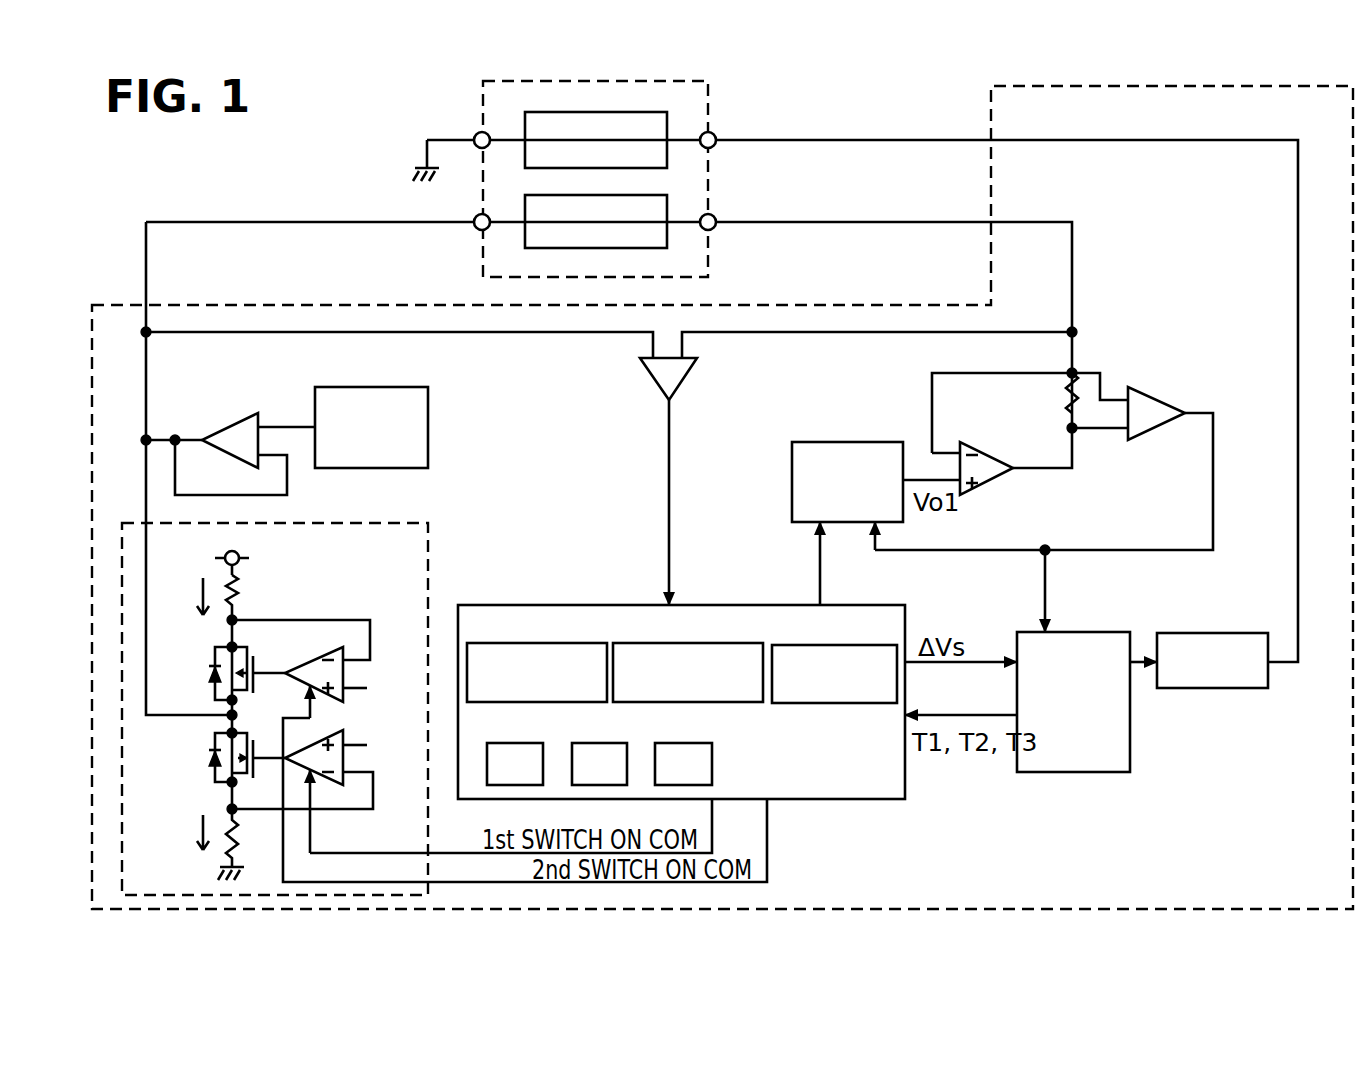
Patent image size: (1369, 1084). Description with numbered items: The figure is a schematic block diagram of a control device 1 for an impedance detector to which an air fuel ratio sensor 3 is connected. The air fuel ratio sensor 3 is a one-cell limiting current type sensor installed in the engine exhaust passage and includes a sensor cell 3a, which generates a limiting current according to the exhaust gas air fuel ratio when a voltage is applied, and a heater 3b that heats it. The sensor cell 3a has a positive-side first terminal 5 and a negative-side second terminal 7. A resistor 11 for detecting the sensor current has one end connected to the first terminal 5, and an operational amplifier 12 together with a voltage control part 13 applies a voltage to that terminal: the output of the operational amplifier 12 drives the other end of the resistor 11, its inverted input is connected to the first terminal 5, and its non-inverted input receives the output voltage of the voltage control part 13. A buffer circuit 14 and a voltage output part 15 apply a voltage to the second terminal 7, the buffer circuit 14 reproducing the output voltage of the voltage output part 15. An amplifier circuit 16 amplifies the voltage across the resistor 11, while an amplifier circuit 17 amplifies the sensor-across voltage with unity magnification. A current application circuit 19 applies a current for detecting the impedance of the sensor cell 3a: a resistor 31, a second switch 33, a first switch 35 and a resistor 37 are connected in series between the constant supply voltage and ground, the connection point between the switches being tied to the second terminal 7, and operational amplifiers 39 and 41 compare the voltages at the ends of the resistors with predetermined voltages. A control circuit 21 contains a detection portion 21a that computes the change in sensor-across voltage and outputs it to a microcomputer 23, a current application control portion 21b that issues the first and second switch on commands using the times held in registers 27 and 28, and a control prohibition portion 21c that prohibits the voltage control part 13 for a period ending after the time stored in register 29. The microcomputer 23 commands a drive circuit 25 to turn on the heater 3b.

The control device 1 is at (352, 305).
The air fuel ratio sensor 3 is at (708, 180).
The sensor cell 3a is at (640, 195).
The heater 3b is at (640, 112).
The first terminal 5 is at (716, 228).
The second terminal 7 is at (474, 228).
The resistor 11 is at (1065, 397).
The operational amplifier 12 is at (985, 447).
The voltage control part 13 is at (820, 442).
The buffer circuit 14 is at (246, 422).
The voltage output part 15 is at (354, 372).
The amplifier circuit 16 is at (1150, 390).
The amplifier circuit 17 is at (650, 381).
The current application circuit 19 is at (402, 522).
The control circuit 21 is at (840, 800).
The detection portion 21a is at (835, 645).
The current application control portion 21b is at (548, 643).
The control prohibition portion 21c is at (705, 643).
The microcomputer 23 is at (1072, 632).
The drive circuit 25 is at (1213, 633).
The register 27 is at (515, 743).
The register 28 is at (600, 743).
The register 29 is at (682, 743).
The resistor 31 is at (243, 593).
The second switch 33 is at (212, 670).
The first switch 35 is at (210, 749).
The resistor 37 is at (243, 838).
The operational amplifier 39 is at (355, 670).
The operational amplifier 41 is at (355, 763).